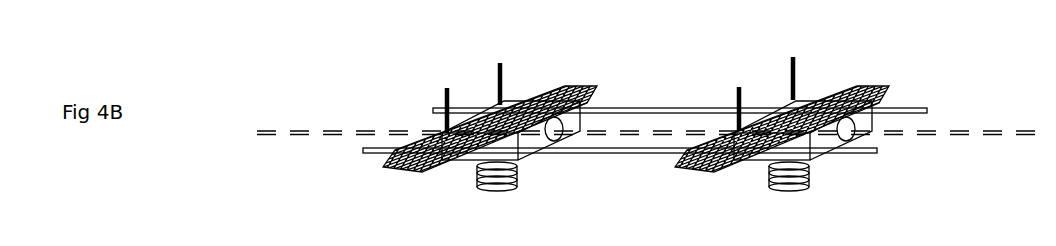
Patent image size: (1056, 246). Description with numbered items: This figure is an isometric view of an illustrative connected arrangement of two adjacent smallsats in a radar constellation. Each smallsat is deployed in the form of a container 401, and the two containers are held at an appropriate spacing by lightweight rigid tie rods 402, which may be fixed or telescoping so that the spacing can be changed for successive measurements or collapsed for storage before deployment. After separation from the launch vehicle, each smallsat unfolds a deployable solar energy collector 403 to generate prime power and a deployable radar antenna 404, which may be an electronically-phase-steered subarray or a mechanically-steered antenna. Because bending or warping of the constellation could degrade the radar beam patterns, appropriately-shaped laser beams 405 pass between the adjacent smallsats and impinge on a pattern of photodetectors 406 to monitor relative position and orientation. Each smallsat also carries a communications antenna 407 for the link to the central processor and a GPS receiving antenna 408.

The container 401 is at (823, 135).
The tie rods 402 is at (690, 108).
The deployable solar energy collector 403 is at (863, 87).
The deployable radar antenna 404 is at (477, 183).
The laser beams 405 is at (303, 140).
The photodetectors 406 is at (556, 137).
The communications antenna 407 is at (498, 63).
The GPS receiving antenna 408 is at (440, 98).